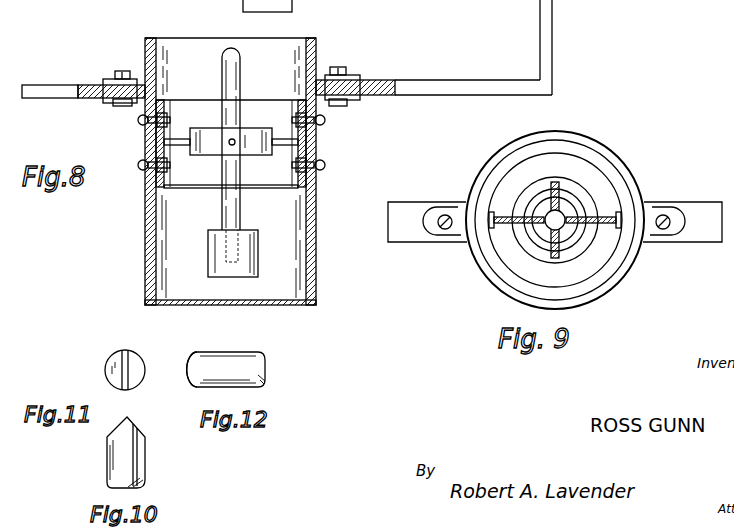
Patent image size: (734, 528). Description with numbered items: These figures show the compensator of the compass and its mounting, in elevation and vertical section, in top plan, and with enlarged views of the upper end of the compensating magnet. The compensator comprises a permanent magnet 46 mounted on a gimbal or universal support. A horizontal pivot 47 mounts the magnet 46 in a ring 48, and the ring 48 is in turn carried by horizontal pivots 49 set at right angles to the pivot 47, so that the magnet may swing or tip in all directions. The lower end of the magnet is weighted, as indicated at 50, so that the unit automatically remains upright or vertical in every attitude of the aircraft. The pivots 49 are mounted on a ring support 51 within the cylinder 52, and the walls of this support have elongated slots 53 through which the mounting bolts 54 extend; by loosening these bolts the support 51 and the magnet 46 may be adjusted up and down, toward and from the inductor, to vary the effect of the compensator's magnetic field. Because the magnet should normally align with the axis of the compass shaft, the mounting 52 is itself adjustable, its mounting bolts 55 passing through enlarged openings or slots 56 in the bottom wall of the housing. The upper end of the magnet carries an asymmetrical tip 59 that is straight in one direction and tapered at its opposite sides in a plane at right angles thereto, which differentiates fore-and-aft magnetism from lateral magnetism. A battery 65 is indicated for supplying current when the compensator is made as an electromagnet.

In FIG. 8, the permanent magnet 46 is at (238, 74).
In FIG. 9, the permanent magnet 46 is at (561, 219).
In FIG. 11, the permanent magnet 46 is at (116, 355).
In FIG. 12, the permanent magnet 46 is at (236, 357).
In FIG. 10, the permanent magnet 46 is at (132, 457).
In FIG. 8, the horizontal pivot 47 is at (235, 140).
In FIG. 9, the horizontal pivot 47 is at (560, 198).
In FIG. 8, the ring 48 is at (211, 150).
In FIG. 9, the ring 48 is at (530, 196).
In FIG. 8, the horizontal pivots 49 is at (289, 148).
In FIG. 9, the horizontal pivots 49 is at (512, 228).
In FIG. 8, the weight 50 is at (258, 259).
In FIG. 8, the ring support 51 is at (193, 187).
In FIG. 8, the cylinder 52 is at (145, 262).
In FIG. 9, the cylinder 52 is at (494, 286).
In FIG. 8, the elongated slots 53 is at (318, 172).
In FIG. 8, the mounting bolts 54 is at (325, 163).
In FIG. 8, the mounting bolts 55 is at (343, 70).
In FIG. 9, the mounting bolts 55 is at (443, 228).
In FIG. 8, the enlarged openings or slots 56 is at (367, 83).
In FIG. 11, the tip 59 is at (139, 361).
In FIG. 12, the tip 59 is at (201, 360).
In FIG. 10, the tip 59 is at (135, 420).
In FIG. 8, the battery 65 is at (322, 0).